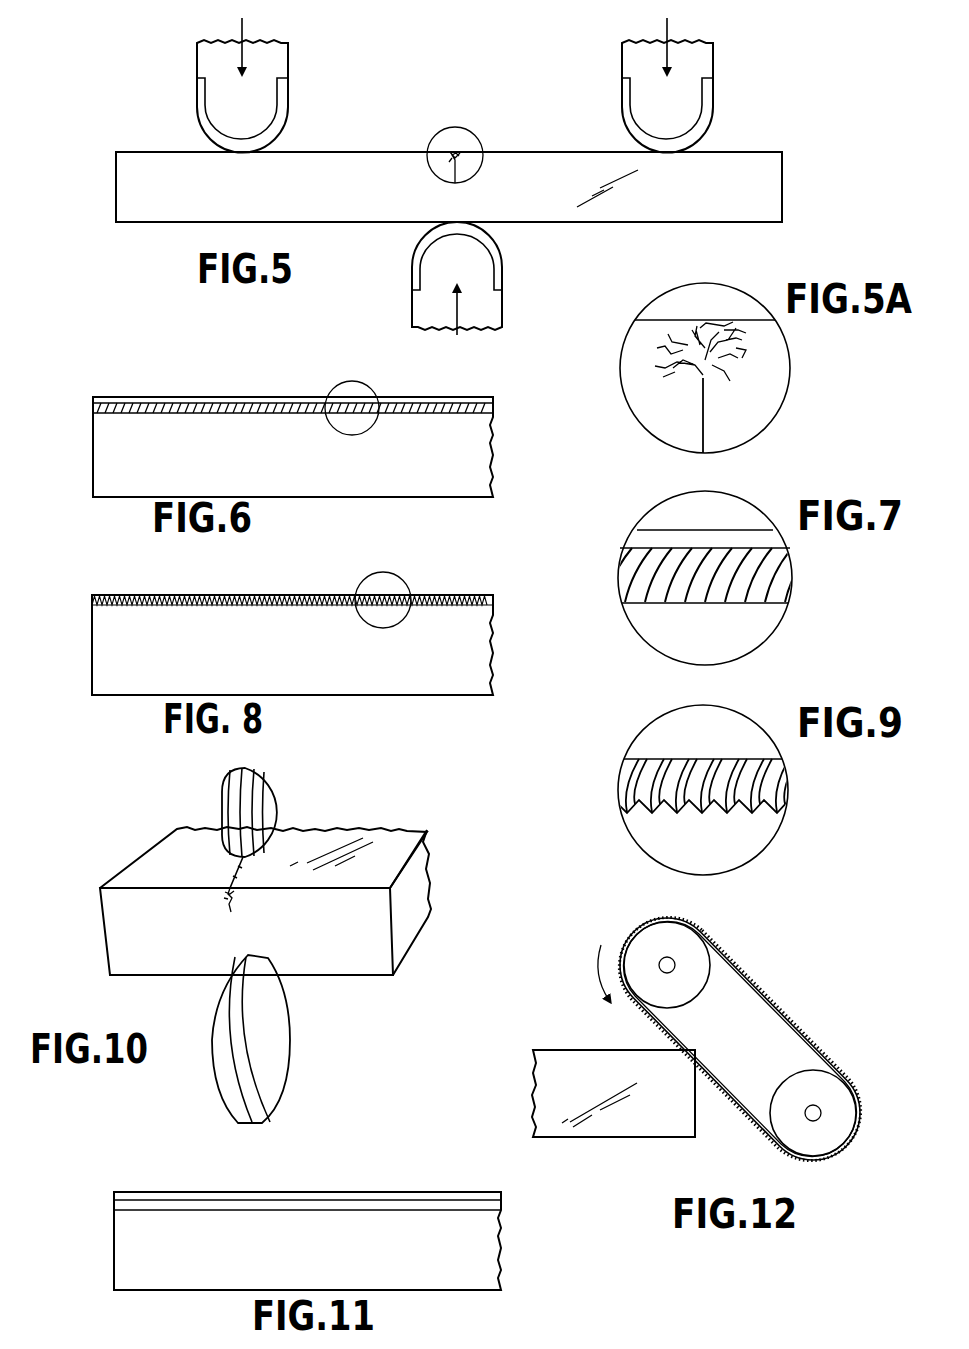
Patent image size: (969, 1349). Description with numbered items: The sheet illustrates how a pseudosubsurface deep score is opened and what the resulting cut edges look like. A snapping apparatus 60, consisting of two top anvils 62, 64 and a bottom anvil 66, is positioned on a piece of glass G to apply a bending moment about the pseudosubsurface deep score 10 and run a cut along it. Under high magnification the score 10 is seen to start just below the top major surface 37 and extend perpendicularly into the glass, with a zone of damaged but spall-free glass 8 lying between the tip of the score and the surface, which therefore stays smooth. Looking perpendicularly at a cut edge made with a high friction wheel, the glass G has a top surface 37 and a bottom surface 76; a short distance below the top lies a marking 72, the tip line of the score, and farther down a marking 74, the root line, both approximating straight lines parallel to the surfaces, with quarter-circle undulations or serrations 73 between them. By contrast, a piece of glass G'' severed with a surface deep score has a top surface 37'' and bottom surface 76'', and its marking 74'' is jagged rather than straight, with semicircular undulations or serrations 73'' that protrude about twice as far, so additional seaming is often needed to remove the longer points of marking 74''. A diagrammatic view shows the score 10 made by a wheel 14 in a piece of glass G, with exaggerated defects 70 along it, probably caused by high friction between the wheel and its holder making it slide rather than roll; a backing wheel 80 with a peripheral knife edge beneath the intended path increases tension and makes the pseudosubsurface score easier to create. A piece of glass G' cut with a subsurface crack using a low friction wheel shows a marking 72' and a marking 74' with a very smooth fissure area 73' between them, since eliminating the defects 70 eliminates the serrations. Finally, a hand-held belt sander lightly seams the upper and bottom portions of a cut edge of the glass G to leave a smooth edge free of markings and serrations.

In FIG. 5, the glass G is at (428, 187).
In FIG. 6, the glass G is at (269, 447).
In FIG. 10, the glass G is at (238, 901).
In FIG. 12, the glass G is at (613, 1120).
In FIG. 11, the piece of glass G' is at (275, 1246).
In FIG. 8, the piece of glass G'' is at (270, 645).
In FIG. 5A, the zone of damaged or physically modified glass 8 is at (748, 342).
In FIG. 5, the pseudosubsurface deep score 10 is at (452, 172).
In FIG. 5A, the pseudosubsurface deep score 10 is at (702, 405).
In FIG. 10, the pseudosubsurface deep score 10 is at (228, 908).
In FIG. 10, the wheel 14 is at (222, 800).
In FIG. 6, the top major surface 37 is at (293, 380).
In FIG. 7, the top major surface 37 is at (705, 515).
In FIG. 8, the top surface 37'' is at (292, 581).
In FIG. 9, the top surface 37'' is at (703, 738).
In FIG. 5, the snapping apparatus 60 is at (752, 81).
In FIG. 5, the top anvil 62 is at (198, 103).
In FIG. 5, the top anvil 64 is at (621, 101).
In FIG. 5, the bottom anvil 66 is at (414, 282).
In FIG. 10, the defects 70 is at (226, 874).
In FIG. 6, the marking 72 is at (293, 385).
In FIG. 7, the marking 72 is at (687, 531).
In FIG. 11, the marking 72' is at (307, 1177).
In FIG. 6, the undulations or serrations 73 is at (379, 419).
In FIG. 7, the undulations or serrations 73 is at (708, 600).
In FIG. 11, the fissure area 73' is at (84, 1203).
In FIG. 9, the undulations or serrations 73'' is at (811, 783).
In FIG. 6, the marking 74 is at (291, 429).
In FIG. 7, the marking 74 is at (727, 625).
In FIG. 11, the marking 74' is at (277, 1234).
In FIG. 8, the marking 74'' is at (289, 606).
In FIG. 9, the marking 74'' is at (705, 812).
In FIG. 6, the bottom surface 76 is at (363, 516).
In FIG. 8, the bottom surface 76'' is at (364, 715).
In FIG. 10, the wheel 80 is at (214, 1069).